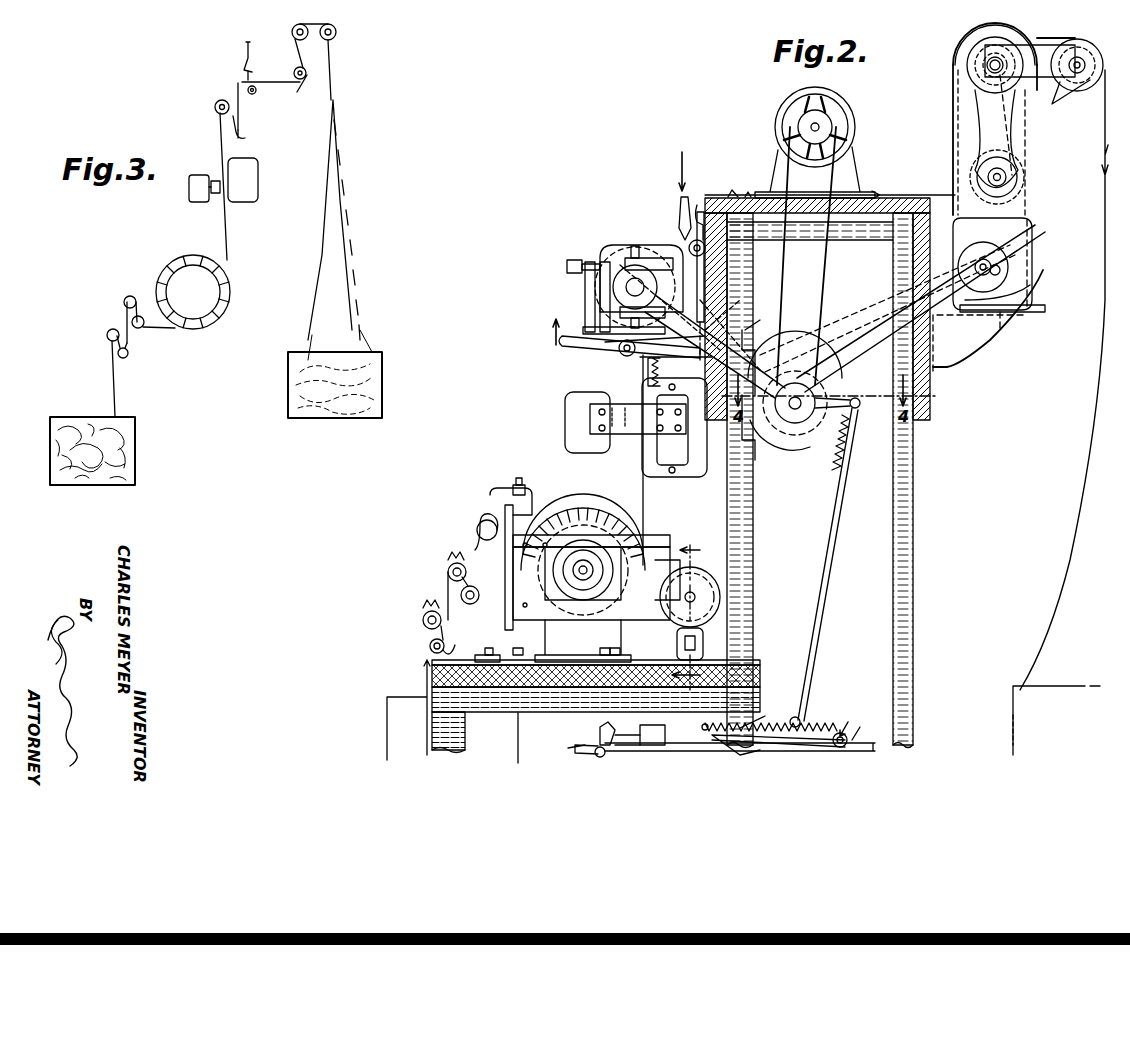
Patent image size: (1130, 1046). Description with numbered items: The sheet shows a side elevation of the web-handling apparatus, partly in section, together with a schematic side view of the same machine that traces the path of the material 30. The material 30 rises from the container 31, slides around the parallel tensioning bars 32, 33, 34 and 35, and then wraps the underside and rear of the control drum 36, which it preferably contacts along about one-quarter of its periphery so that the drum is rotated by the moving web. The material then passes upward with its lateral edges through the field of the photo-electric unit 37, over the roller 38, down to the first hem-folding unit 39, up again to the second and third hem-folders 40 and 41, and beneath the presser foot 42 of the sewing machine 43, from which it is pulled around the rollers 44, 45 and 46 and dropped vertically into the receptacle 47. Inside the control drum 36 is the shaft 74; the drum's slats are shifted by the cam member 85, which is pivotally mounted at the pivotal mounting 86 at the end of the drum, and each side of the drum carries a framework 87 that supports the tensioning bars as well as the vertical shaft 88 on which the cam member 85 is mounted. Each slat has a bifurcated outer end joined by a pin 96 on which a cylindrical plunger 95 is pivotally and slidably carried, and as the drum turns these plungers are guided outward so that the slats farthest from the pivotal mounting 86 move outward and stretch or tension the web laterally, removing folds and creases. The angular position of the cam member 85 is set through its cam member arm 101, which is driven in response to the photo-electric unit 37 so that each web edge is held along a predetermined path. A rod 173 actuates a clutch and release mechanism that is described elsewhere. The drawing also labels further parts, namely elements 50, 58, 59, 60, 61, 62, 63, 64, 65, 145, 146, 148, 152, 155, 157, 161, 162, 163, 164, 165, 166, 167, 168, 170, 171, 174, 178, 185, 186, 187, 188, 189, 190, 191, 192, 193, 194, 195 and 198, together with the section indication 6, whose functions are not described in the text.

In FIG. 3, the material 30 is at (337, 175).
In FIG. 2, the material 30 is at (915, 197).
In FIG. 3, the container 31 is at (136, 458).
In FIG. 3, the tensioning bar 32 is at (108, 332).
In FIG. 2, the tensioning bar 32 is at (424, 615).
In FIG. 3, the tensioning bar 33 is at (128, 356).
In FIG. 2, the tensioning bar 33 is at (430, 644).
In FIG. 3, the tensioning bar 34 is at (128, 297).
In FIG. 2, the tensioning bar 34 is at (452, 566).
In FIG. 3, the tensioning bar 35 is at (143, 327).
In FIG. 2, the tensioning bar 35 is at (475, 590).
In FIG. 3, the control drum 36 is at (186, 247).
In FIG. 2, the control drum 36 is at (589, 502).
In FIG. 3, the photo-electric unit 37 is at (268, 183).
In FIG. 2, the photo-electric unit 37 is at (558, 428).
In FIG. 3, the roller 38 is at (215, 106).
In FIG. 2, the roller 38 is at (690, 245).
In FIG. 3, the first hem-folding unit 39 is at (243, 138).
In FIG. 2, the second hem-folder 40 is at (696, 205).
In FIG. 2, the third hem-folder 41 is at (734, 195).
In FIG. 3, the presser foot 42 is at (255, 78).
In FIG. 2, the sewing machine 43 is at (856, 172).
In FIG. 3, the roller 44 is at (278, 102).
In FIG. 2, the roller 44 is at (1027, 180).
In FIG. 3, the roller 45 is at (294, 30).
In FIG. 2, the roller 45 is at (968, 58).
In FIG. 3, the roller 46 is at (338, 32).
In FIG. 2, the roller 46 is at (1077, 40).
In FIG. 3, the receptacle 47 is at (383, 374).
In FIG. 2, the receptacle 47 is at (1010, 708).
In FIG. 2, the motor 50 is at (658, 246).
In FIG. 2, the belt 58 is at (720, 325).
In FIG. 2, the pulley 59 is at (790, 415).
In FIG. 2, the spring 60 is at (802, 420).
In FIG. 2, the pulley housing 61 is at (795, 358).
In FIG. 2, the bracket plate 62 is at (588, 285).
In FIG. 2, the adjusting screw 63 is at (556, 322).
In FIG. 2, the bracket plate 64 is at (600, 297).
In FIG. 2, the adjusting knob 65 is at (567, 270).
In FIG. 2, the shaft 74 is at (585, 560).
In FIG. 2, the cam member 85 is at (498, 520).
In FIG. 2, the pivotal mounting 86 is at (532, 500).
In FIG. 2, the framework 87 is at (480, 548).
In FIG. 2, the vertical shaft 88 is at (512, 482).
In FIG. 2, the cylindrical plunger 95 is at (588, 563).
In FIG. 2, the pin 96 is at (572, 514).
In FIG. 2, the cam member arm 101 is at (645, 600).
In FIG. 2, the bracket 145 is at (610, 366).
In FIG. 2, the spring 146 is at (648, 373).
In FIG. 2, the lever 148 is at (562, 350).
In FIG. 2, the rod 152 is at (697, 222).
In FIG. 2, the lever 155 is at (640, 346).
In FIG. 2, the belt 157 is at (745, 330).
In FIG. 2, the frame 161 is at (828, 272).
In FIG. 2, the belt 162 is at (862, 362).
In FIG. 2, the pulley 163 is at (975, 283).
In FIG. 2, the housing 164 is at (1012, 245).
In FIG. 2, the base 165 is at (1035, 272).
In FIG. 2, the belt 166 is at (953, 120).
In FIG. 2, the belt 167 is at (968, 35).
In FIG. 2, the shaft 168 is at (987, 67).
In FIG. 2, the link 170 is at (1005, 152).
In FIG. 2, the bar 171 is at (1042, 40).
In FIG. 2, the rod 173 is at (820, 610).
In FIG. 2, the pivot 174 is at (860, 727).
In FIG. 2, the pivot 178 is at (848, 397).
In FIG. 2, the block 185 is at (652, 725).
In FIG. 2, the cam 186 is at (612, 723).
In FIG. 2, the lever 187 is at (605, 728).
In FIG. 2, the lever 188 is at (595, 735).
In FIG. 2, the link 189 is at (765, 726).
In FIG. 2, the pivot 190 is at (848, 722).
In FIG. 2, the bar 191 is at (720, 752).
In FIG. 2, the spring 192 is at (750, 724).
In FIG. 2, the link 193 is at (818, 745).
In FIG. 2, the pivot 194 is at (847, 740).
In FIG. 2, the pivot 195 is at (798, 716).
In FIG. 2, the lever 198 is at (568, 750).
In FIG. 2, the section line 6 is at (712, 675).